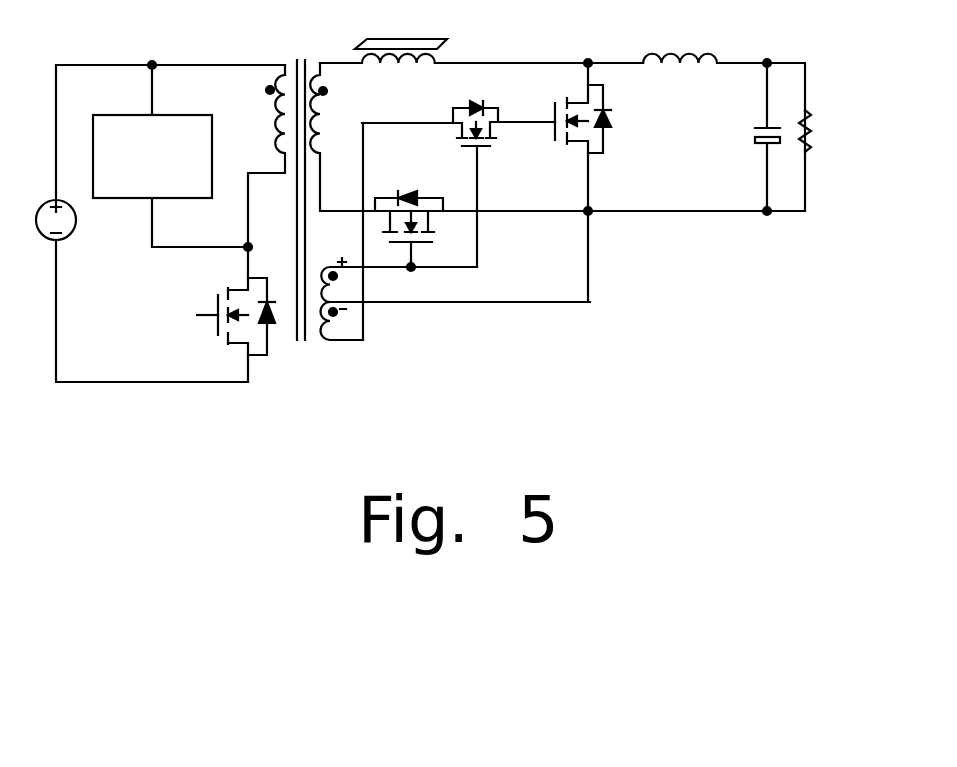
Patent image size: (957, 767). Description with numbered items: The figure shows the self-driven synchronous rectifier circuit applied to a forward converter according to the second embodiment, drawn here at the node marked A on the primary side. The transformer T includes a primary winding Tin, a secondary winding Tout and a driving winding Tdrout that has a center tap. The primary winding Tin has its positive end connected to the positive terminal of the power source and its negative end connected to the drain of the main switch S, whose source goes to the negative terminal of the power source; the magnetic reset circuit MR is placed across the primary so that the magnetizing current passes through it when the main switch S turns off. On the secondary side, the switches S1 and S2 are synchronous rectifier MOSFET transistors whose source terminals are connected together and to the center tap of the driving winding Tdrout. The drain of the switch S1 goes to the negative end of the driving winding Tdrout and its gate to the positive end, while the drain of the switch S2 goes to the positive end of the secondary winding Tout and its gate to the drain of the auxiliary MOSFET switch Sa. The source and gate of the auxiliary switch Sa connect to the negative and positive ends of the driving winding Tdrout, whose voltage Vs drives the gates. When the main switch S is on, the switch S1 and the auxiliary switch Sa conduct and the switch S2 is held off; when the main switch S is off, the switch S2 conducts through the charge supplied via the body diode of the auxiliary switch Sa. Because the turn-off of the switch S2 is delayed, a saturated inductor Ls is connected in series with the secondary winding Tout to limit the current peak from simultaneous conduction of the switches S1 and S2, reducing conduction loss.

The input source node / primary side A is at (160, 205).
The magnetic reset circuit MR is at (172, 156).
The main switch S is at (221, 314).
The transformer T is at (301, 184).
The primary winding Tin is at (256, 156).
The secondary winding Tout is at (557, 137).
The driving winding Tdrout is at (456, 325).
The saturated inductor Ls is at (481, 36).
The auxiliary MOSFET switch Sa is at (458, 173).
The MOSFET switch S1 is at (408, 231).
The MOSFET switch S2 is at (596, 182).
The drive winding voltage Vs is at (351, 283).